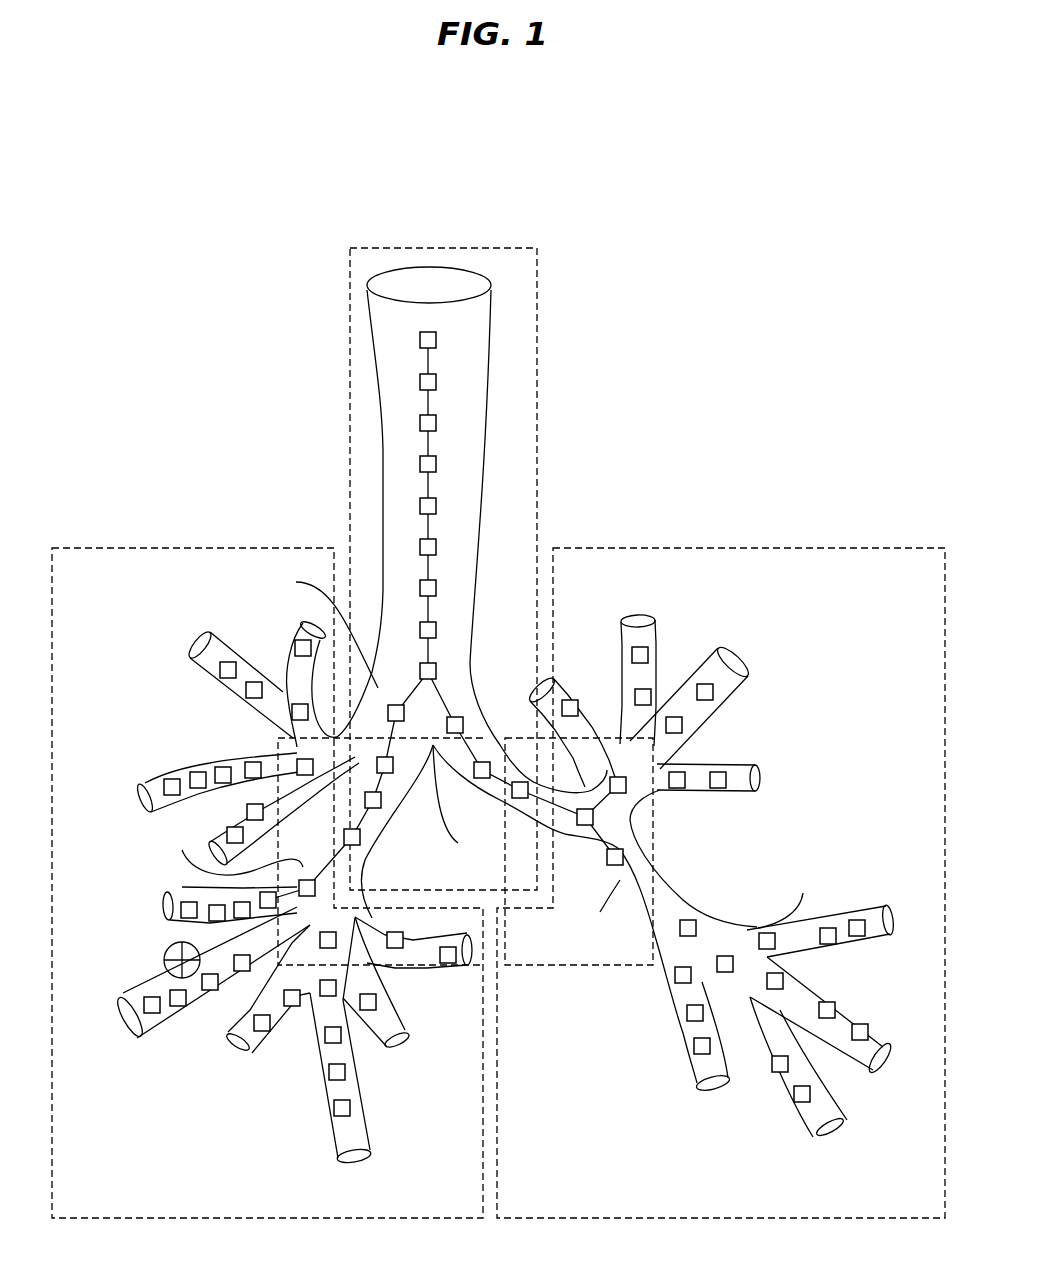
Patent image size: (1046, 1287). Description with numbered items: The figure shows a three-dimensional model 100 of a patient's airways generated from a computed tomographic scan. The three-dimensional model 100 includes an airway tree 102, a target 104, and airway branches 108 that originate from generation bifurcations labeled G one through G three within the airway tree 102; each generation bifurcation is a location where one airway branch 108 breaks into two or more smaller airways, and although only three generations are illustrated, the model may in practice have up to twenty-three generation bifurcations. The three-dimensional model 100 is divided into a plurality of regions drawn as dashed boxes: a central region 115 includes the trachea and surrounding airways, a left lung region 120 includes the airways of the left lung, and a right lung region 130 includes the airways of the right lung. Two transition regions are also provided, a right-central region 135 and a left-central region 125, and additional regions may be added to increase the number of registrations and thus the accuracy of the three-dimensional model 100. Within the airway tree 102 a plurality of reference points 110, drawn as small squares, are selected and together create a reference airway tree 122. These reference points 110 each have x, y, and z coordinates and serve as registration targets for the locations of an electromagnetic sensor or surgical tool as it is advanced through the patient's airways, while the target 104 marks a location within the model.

The 3D model 100 is at (493, 212).
The airway tree 102 is at (395, 413).
The target 104 is at (163, 968).
The airway branches 108 is at (250, 753).
The reference points 110 is at (437, 548).
The central region 115 is at (537, 348).
The left lung region 120 is at (878, 547).
The reference airway tree 122 is at (430, 485).
The left-central region 125 is at (557, 966).
The right lung region 130 is at (132, 547).
The right-central region 135 is at (402, 965).